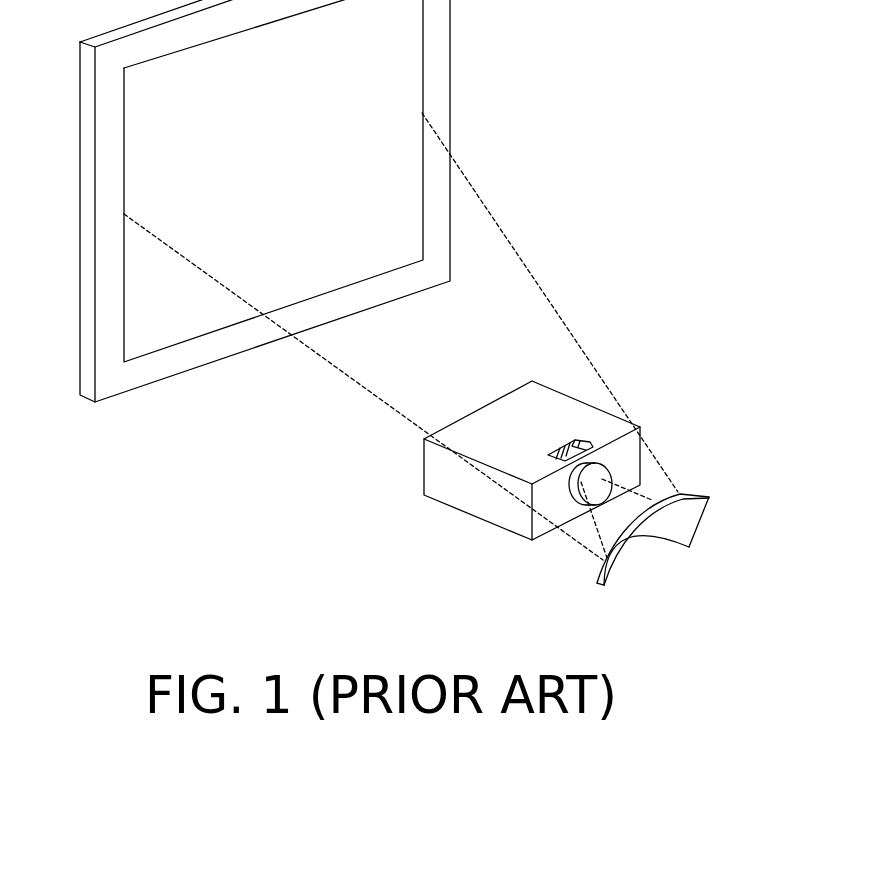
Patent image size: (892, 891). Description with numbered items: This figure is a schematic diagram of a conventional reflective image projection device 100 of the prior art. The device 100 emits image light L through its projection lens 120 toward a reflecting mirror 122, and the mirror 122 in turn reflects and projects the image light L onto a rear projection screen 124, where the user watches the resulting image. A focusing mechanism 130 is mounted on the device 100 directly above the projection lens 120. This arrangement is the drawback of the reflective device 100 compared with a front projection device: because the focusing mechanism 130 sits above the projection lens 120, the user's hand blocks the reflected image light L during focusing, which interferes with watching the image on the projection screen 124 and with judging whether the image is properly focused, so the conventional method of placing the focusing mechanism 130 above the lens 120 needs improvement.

The reflective image projection device 100 is at (565, 380).
The projection lens 120 is at (627, 458).
The reflecting mirror 122 is at (700, 527).
The rear projection screen 124 is at (451, 51).
The focusing mechanism 130 is at (588, 440).
The image light L is at (518, 255).